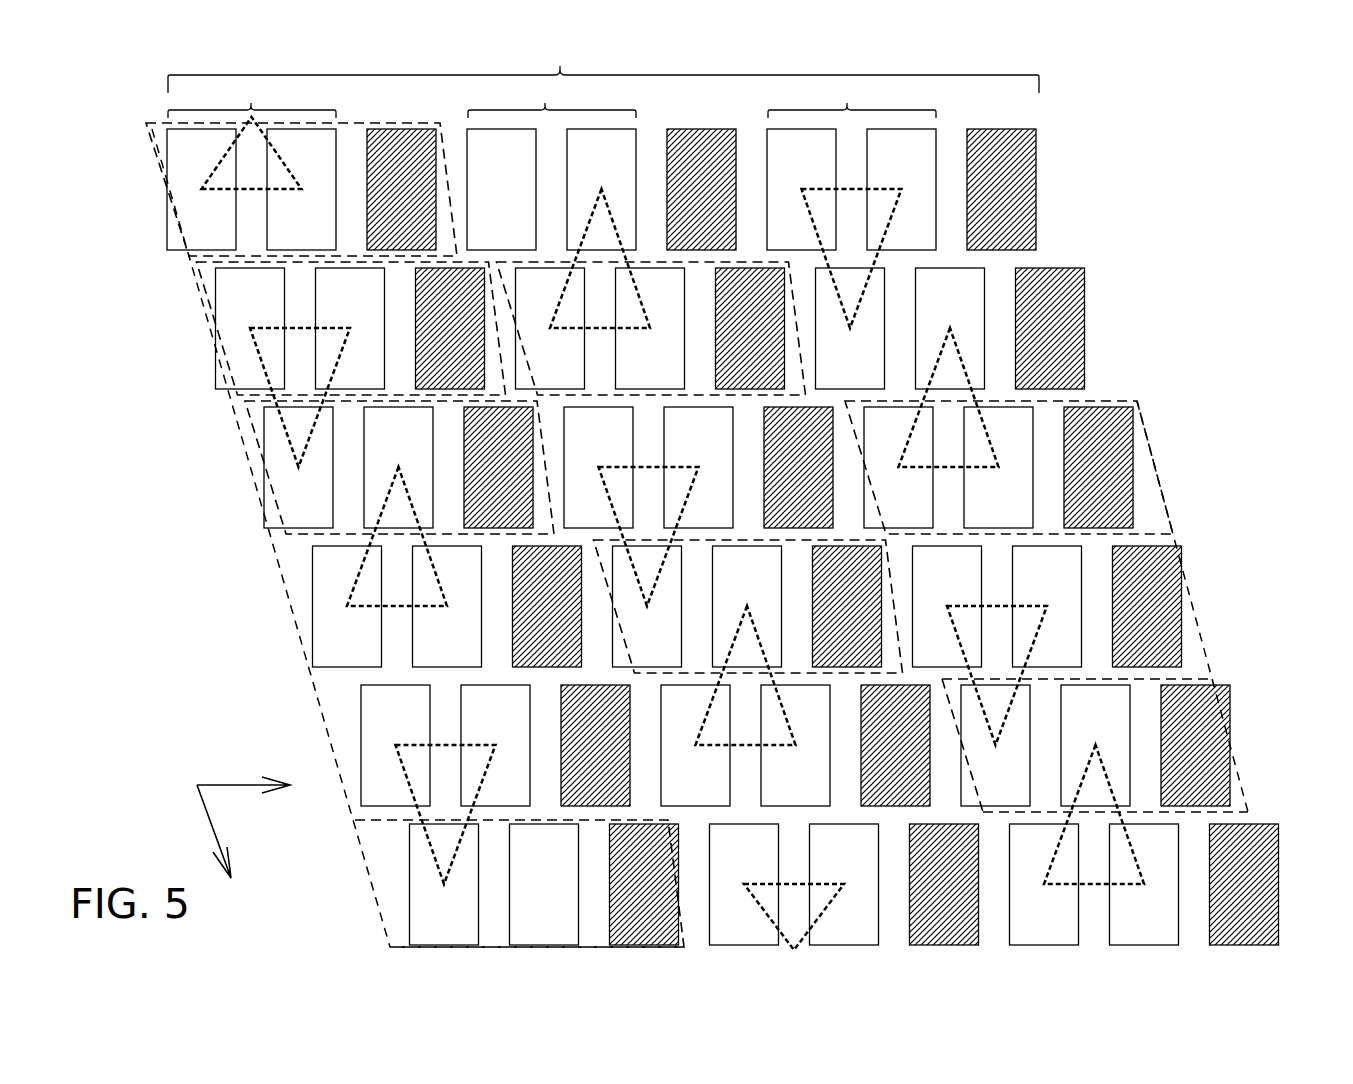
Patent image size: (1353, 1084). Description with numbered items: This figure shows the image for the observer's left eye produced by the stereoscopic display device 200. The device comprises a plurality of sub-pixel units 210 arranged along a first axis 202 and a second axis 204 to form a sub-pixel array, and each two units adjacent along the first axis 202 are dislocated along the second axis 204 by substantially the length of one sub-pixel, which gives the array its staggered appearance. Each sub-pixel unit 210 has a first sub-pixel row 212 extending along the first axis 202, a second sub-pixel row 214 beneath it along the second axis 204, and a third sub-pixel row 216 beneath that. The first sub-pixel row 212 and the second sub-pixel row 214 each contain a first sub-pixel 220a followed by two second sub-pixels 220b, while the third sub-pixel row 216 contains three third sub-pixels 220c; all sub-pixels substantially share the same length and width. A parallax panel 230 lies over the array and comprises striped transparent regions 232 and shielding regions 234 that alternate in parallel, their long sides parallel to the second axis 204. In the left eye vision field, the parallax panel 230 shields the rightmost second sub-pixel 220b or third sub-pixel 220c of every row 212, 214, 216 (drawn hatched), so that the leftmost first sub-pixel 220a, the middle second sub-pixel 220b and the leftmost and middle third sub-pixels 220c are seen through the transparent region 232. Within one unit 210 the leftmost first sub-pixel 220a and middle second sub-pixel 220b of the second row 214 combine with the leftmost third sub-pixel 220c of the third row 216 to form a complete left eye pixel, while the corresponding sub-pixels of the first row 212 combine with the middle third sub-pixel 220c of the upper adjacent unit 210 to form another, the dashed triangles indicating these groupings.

The stereoscopic display device 200 is at (1207, 142).
The first axis 202 is at (266, 785).
The second axis 204 is at (227, 849).
The sub-pixel unit 210 is at (215, 350).
The first sub-pixel row 212 is at (157, 154).
The second sub-pixel row 214 is at (206, 292).
The third sub-pixel row 216 is at (250, 430).
The first sub-pixel 220a is at (623, 537).
The second sub-pixel 220b is at (773, 537).
The third sub-pixel 220c is at (747, 537).
The parallax panel 230 is at (603, 65).
The transparent region 232 is at (552, 95).
The shielding region 234 is at (403, 128).